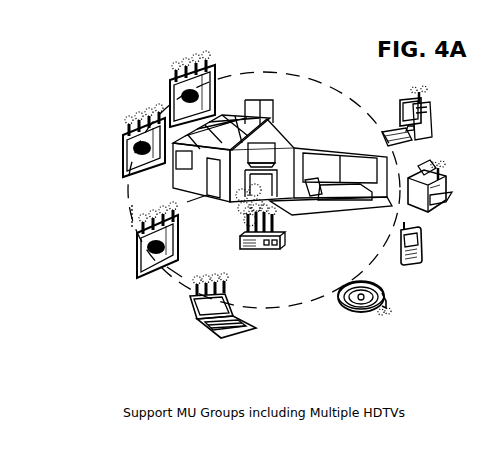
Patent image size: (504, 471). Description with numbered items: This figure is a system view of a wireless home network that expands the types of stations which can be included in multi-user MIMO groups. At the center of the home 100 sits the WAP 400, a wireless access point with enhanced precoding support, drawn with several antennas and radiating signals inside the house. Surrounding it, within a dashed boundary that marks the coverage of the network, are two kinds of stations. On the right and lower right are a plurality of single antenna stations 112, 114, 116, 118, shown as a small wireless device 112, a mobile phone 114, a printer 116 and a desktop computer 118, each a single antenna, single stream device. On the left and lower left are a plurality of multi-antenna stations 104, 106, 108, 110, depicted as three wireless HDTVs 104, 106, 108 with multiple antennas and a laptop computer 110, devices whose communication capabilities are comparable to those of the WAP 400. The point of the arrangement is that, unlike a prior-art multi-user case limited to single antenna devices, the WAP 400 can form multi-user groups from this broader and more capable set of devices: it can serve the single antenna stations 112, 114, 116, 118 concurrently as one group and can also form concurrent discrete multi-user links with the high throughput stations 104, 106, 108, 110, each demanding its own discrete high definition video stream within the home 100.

The home 100 is at (281, 140).
The multi-antenna station 104 is at (170, 92).
The multi-antenna station 106 is at (123, 138).
The multi-antenna station 108 is at (137, 258).
The multi-antenna station 110 is at (194, 316).
The single antenna station 112 is at (374, 314).
The single antenna station 114 is at (420, 259).
The single antenna station 116 is at (444, 208).
The single antenna station 118 is at (432, 124).
The wireless access point (WAP) 400 is at (283, 247).